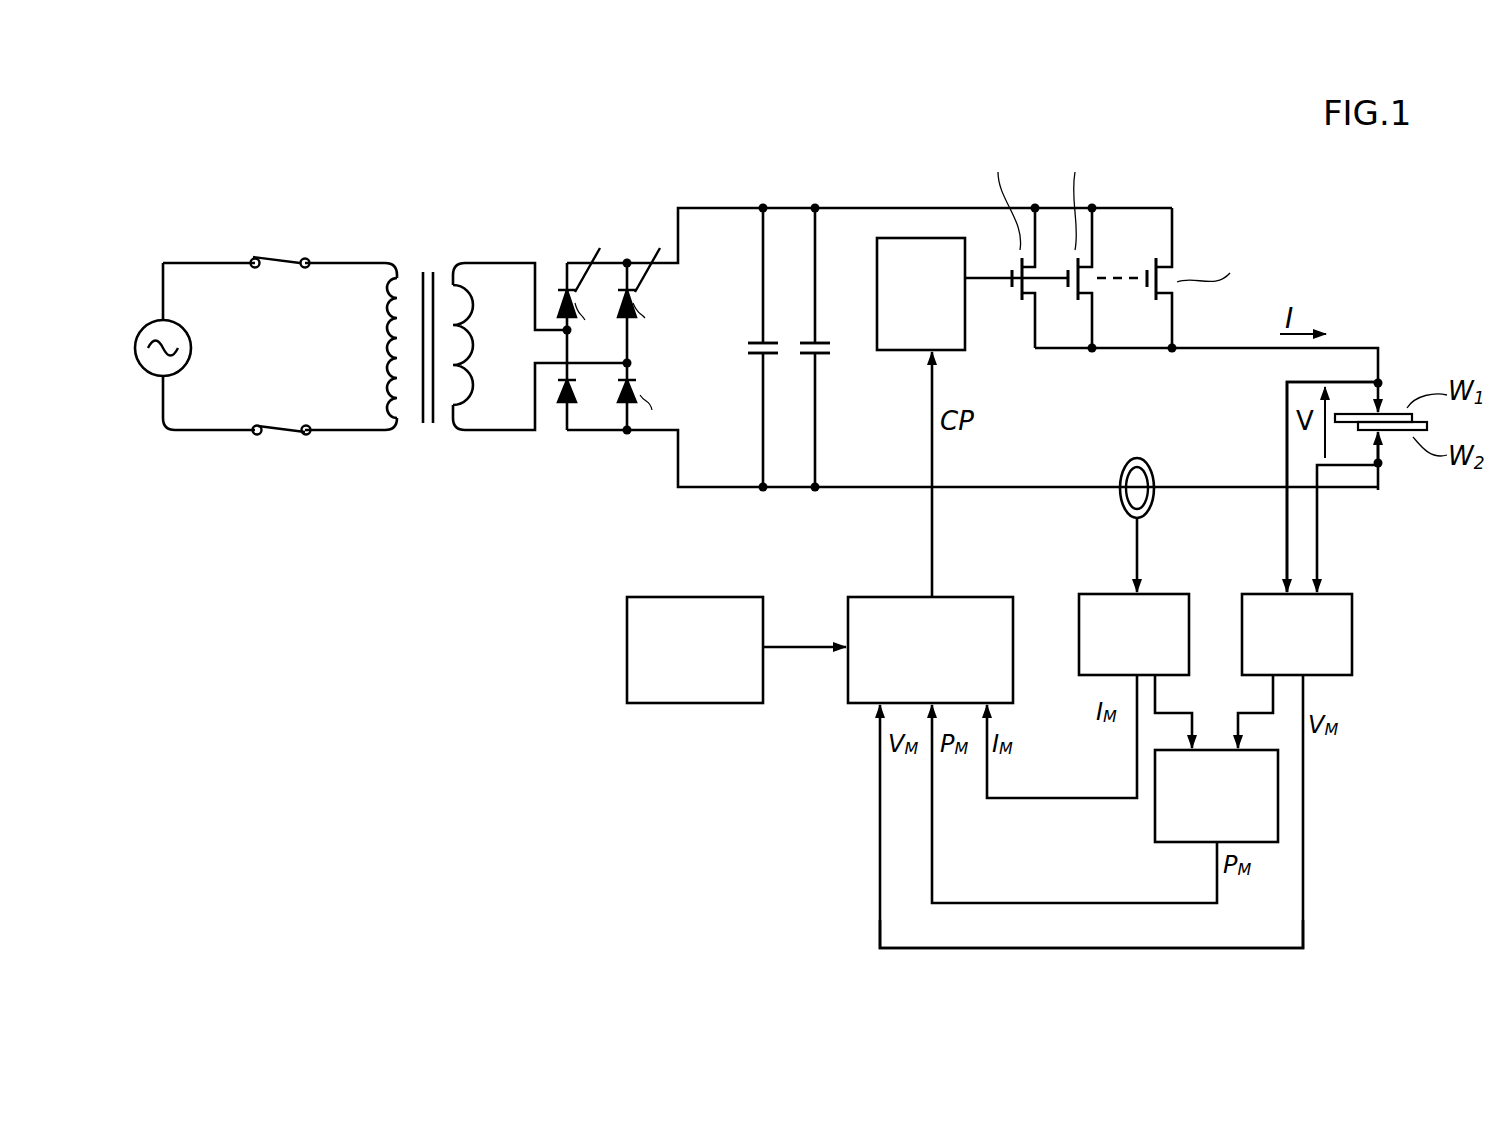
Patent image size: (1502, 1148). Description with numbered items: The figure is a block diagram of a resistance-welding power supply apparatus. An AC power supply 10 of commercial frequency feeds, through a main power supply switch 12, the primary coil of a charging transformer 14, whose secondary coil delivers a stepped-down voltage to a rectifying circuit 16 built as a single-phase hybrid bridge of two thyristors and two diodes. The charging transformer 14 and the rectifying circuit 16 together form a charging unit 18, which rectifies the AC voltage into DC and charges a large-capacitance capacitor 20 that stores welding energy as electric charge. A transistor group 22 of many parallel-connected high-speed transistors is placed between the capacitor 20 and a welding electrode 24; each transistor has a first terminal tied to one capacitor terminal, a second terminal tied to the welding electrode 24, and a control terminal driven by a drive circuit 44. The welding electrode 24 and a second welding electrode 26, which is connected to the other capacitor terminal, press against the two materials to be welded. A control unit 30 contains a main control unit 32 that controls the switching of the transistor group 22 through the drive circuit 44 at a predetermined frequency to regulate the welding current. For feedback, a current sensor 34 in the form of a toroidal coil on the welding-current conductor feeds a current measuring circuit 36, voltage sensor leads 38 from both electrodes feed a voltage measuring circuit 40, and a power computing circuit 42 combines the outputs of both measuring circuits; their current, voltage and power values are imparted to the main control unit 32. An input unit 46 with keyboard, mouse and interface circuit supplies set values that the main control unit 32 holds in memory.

The AC power supply 10 is at (186, 323).
The main power supply switch 12 is at (278, 253).
The charging transformer 14 is at (423, 263).
The rectifying circuit 16 is at (595, 407).
The charging unit 18 is at (507, 257).
The large-capacitance capacitor 20 is at (805, 333).
The transistor group 22 is at (1190, 232).
The welding electrode 24 is at (1383, 390).
The welding electrode 26 is at (1385, 452).
The control unit 30 is at (842, 803).
The main control unit 32 is at (967, 595).
The current sensor 34 is at (1150, 503).
The current measuring circuit 36 is at (1100, 594).
The voltage sensor leads 38 is at (1320, 545).
The voltage measuring circuit 40 is at (1352, 632).
The power computing circuit 42 is at (1278, 792).
The drive circuit 44 is at (920, 238).
The input unit 46 is at (627, 628).